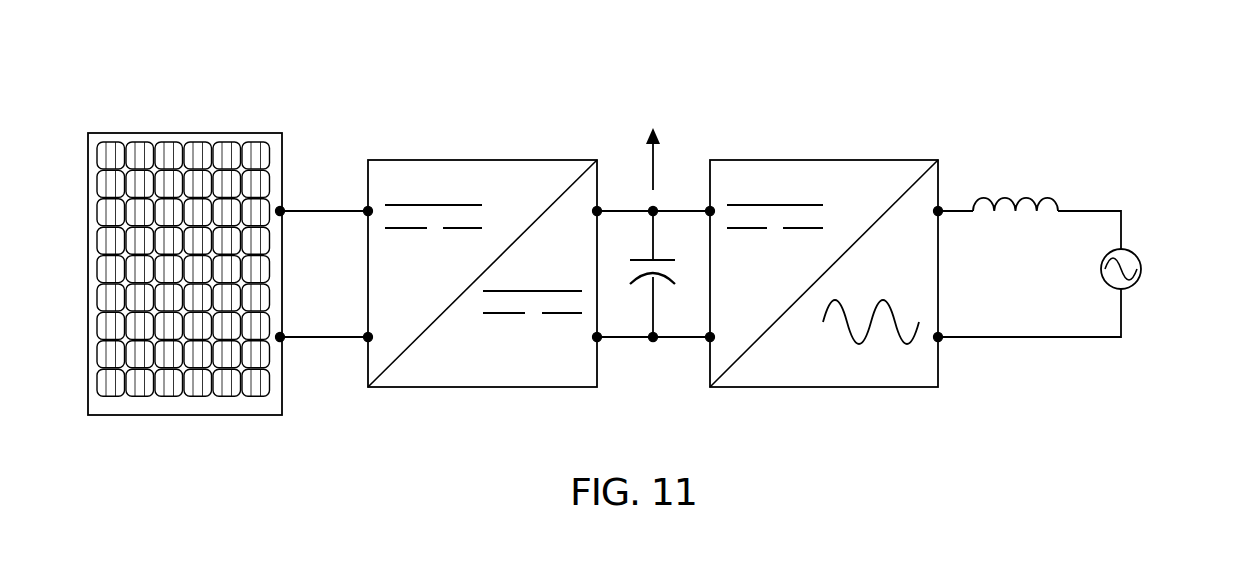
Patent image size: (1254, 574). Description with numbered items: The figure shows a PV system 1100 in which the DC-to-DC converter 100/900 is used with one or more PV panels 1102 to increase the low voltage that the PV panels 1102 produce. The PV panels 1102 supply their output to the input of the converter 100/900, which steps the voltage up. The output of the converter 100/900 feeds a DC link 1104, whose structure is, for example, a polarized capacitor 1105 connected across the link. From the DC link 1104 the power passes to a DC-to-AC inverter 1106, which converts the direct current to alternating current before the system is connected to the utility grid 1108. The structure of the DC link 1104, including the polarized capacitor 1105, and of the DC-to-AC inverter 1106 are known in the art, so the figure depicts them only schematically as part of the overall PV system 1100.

The PV system 1100 is at (1096, 95).
The PV panel 1102 is at (184, 132).
The converter 100 is at (477, 241).
The converter 900 is at (508, 145).
The DC link 1104 is at (645, 167).
The polarized capacitor 1105 is at (658, 257).
The DC-to-AC inverter 1106 is at (863, 145).
The utility grid 1108 is at (1143, 268).